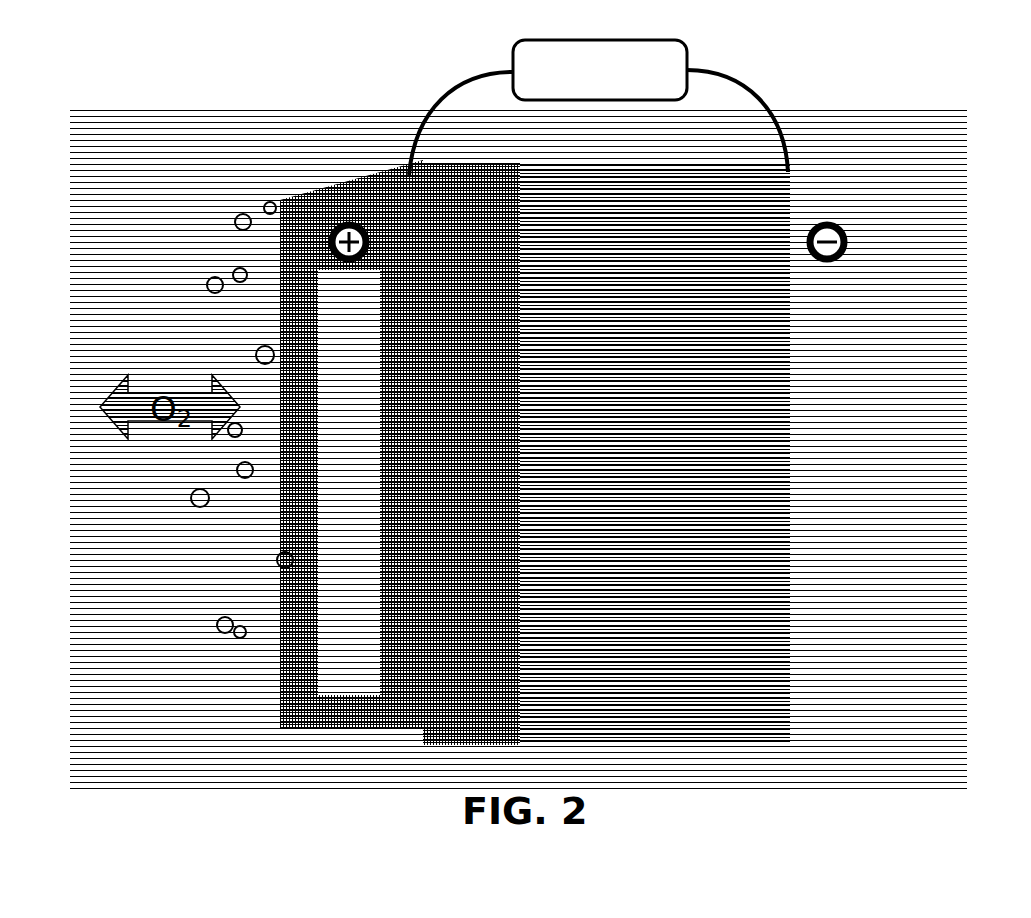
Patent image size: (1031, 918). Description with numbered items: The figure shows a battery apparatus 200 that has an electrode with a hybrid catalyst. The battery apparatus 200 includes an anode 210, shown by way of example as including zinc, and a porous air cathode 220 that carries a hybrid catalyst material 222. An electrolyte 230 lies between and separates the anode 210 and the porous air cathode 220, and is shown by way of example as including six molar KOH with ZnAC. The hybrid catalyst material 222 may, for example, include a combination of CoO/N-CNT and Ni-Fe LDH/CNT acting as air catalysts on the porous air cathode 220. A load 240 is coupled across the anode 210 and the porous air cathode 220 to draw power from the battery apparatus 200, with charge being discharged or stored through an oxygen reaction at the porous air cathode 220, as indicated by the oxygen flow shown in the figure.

The battery apparatus 200 is at (943, 45).
The anode 210 is at (858, 191).
The porous air cathode 220 is at (458, 162).
The hybrid catalyst material 222 is at (494, 203).
The electrolyte 230 is at (590, 160).
The load 240 is at (668, 41).